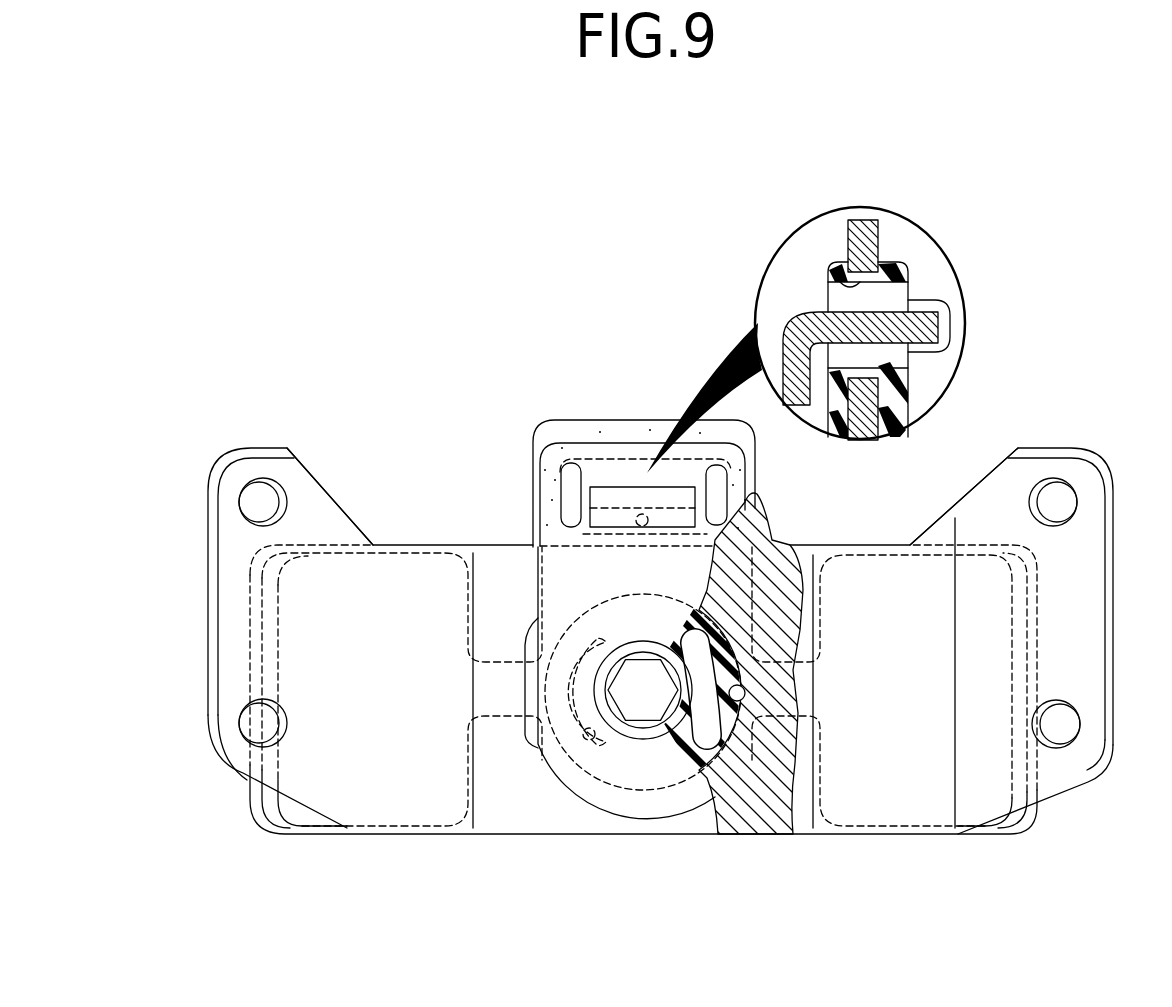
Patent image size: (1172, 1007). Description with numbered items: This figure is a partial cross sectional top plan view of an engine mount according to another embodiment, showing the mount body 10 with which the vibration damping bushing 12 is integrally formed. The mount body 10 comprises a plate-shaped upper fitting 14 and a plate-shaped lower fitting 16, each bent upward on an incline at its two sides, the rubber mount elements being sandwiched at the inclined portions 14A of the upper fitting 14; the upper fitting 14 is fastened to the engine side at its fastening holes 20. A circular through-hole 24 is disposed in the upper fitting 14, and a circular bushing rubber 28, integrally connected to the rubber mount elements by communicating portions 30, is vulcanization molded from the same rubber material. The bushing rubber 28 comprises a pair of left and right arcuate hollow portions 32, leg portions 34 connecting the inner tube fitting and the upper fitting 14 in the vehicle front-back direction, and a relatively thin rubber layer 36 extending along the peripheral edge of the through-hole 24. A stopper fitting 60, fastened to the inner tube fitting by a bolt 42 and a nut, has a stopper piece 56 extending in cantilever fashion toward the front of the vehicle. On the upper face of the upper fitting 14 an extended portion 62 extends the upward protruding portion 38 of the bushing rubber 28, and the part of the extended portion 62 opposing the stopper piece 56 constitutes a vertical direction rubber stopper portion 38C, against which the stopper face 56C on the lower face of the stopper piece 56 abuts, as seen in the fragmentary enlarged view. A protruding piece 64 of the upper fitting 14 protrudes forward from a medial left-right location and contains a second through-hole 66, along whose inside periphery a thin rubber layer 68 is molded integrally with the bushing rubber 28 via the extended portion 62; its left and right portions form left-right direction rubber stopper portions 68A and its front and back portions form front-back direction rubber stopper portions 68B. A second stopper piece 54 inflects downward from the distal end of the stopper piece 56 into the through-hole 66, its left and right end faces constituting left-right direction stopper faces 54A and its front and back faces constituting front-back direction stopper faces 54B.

The mount body 10 is at (467, 432).
The vibration damping bushing 12 is at (727, 610).
The upper fitting 14 is at (310, 470).
The inclined portions 14A is at (347, 537).
The lower fitting 16 is at (1037, 815).
The fastening holes 20 is at (252, 493).
The through-hole 24 is at (746, 692).
The bushing rubber 28 is at (745, 673).
The communicating portions 30 is at (502, 694).
The arcuate hollow portions 32 is at (590, 740).
The leg portions 34 is at (633, 610).
The thin rubber layer 36 is at (713, 748).
The protruding portion 38 is at (530, 653).
The vertical direction rubber stopper portion 38C is at (772, 540).
The bolt 42 is at (643, 705).
The second stopper piece 54 is at (690, 478).
The left-right direction stopper faces 54A is at (598, 470).
The front-back direction stopper faces 54B is at (637, 483).
The stopper piece 56 is at (575, 560).
The stopper face 56C is at (778, 333).
The stopper fitting 60 is at (533, 693).
The extended portion 62 is at (545, 505).
The protruding piece 64 is at (563, 430).
The second through-hole 66 is at (720, 487).
The thin rubber layer 68 is at (535, 462).
The left-right direction rubber stopper portions 68A is at (558, 512).
The front-back direction rubber stopper portions 68B is at (632, 465).